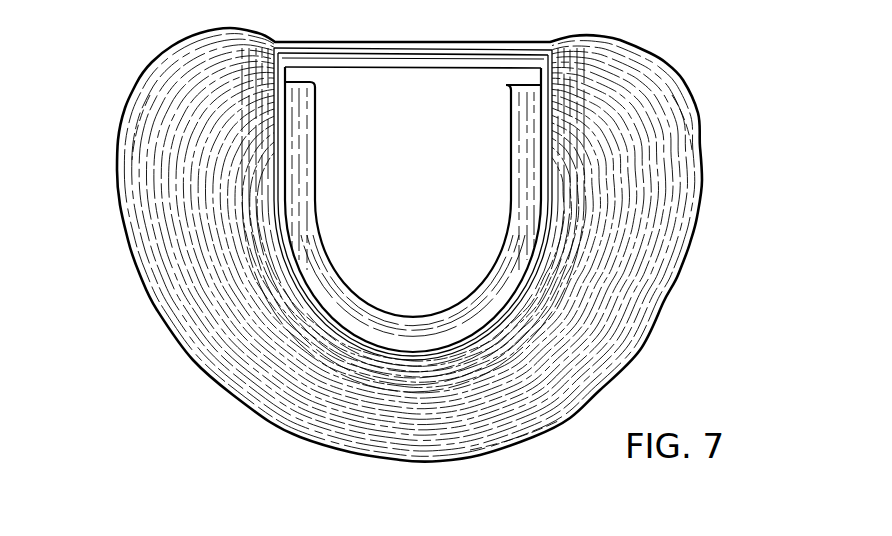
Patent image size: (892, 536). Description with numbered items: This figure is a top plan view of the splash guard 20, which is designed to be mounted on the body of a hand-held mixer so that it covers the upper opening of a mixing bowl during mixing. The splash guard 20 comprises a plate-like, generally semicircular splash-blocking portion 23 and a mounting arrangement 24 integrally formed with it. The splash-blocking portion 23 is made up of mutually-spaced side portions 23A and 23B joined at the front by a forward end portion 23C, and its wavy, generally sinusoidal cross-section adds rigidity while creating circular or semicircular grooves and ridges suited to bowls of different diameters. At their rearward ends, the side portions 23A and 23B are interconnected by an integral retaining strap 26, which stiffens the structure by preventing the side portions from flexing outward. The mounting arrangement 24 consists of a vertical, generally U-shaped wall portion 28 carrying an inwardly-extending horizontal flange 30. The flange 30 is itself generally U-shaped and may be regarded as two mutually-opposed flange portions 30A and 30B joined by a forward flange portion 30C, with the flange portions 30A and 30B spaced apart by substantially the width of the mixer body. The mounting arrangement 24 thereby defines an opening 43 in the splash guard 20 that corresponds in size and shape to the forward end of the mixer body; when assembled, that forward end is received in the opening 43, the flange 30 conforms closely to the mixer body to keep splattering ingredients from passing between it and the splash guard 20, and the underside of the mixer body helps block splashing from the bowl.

The splash guard 20 is at (715, 72).
The splash-blocking portion 23 is at (680, 230).
The side portion 23A is at (683, 133).
The side portion 23B is at (132, 120).
The forward end portion 23C is at (520, 440).
The mounting arrangement 24 is at (274, 208).
The retaining strap 26 is at (433, 62).
The wall portion 28 is at (500, 317).
The flange 30 is at (307, 123).
The flange portion 30A is at (525, 152).
The flange portion 30B is at (297, 192).
The forward flange portion 30C is at (418, 313).
The opening 43 is at (437, 227).